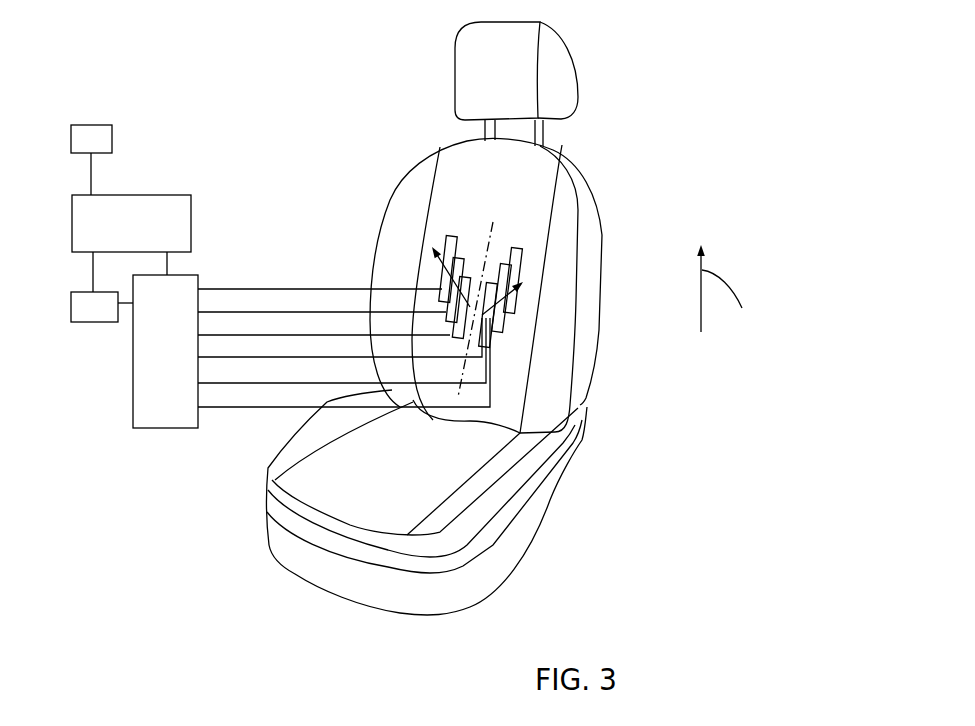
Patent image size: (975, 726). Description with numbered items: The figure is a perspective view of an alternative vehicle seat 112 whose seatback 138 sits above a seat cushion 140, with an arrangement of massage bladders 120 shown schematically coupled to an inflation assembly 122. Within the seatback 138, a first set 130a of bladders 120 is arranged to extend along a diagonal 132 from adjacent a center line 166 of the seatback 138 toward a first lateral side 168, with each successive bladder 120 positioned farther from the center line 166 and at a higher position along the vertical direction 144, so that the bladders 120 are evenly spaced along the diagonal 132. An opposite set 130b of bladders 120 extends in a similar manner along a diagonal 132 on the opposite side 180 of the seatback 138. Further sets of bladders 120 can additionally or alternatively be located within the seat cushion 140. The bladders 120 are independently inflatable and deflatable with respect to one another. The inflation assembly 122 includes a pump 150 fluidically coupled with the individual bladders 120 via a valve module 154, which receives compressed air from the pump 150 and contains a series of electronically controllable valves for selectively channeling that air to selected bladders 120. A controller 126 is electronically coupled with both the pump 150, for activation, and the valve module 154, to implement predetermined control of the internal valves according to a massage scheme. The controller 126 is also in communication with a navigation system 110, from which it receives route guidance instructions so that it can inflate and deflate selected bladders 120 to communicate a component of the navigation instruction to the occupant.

The navigation system 110 is at (93, 134).
The vehicle seat 112 is at (606, 66).
The bladders 120 is at (447, 237).
The inflation assembly 122 is at (180, 349).
The controller 126 is at (178, 229).
The first set of bladders 130a is at (531, 250).
The opposite set of bladders 130b is at (453, 230).
The diagonal 132 is at (441, 268).
The seatback 138 is at (590, 232).
The seat cushion 140 is at (548, 510).
The vertical direction 144 is at (736, 288).
The pump 150 is at (92, 313).
The valve module 154 is at (176, 379).
The center line 166 is at (488, 240).
The first lateral side 168 is at (580, 363).
The opposite side 180 is at (408, 172).